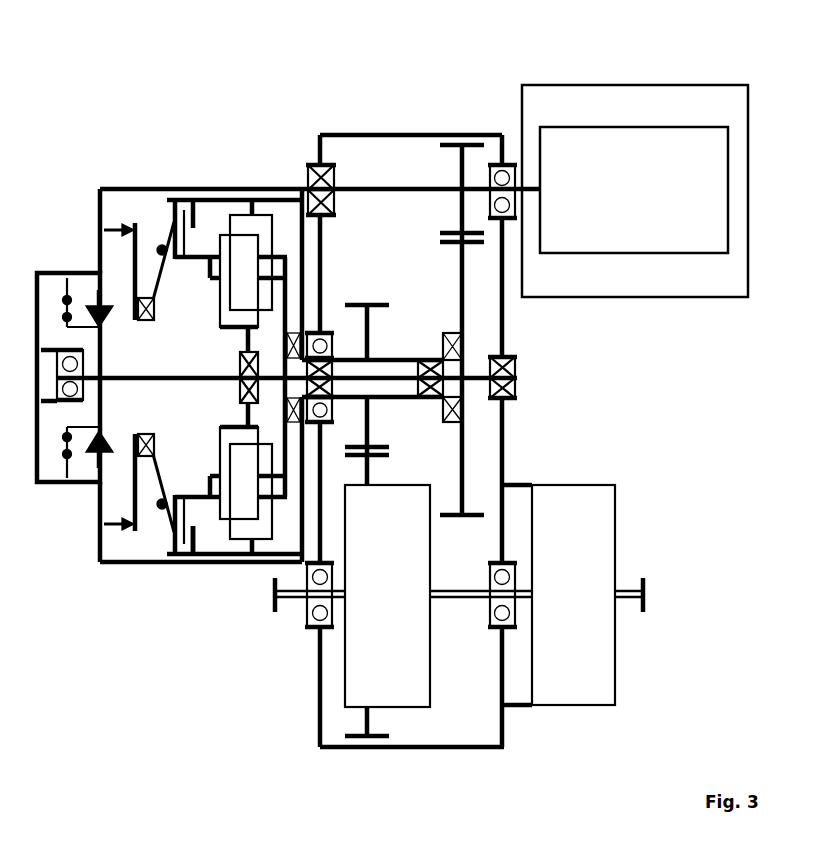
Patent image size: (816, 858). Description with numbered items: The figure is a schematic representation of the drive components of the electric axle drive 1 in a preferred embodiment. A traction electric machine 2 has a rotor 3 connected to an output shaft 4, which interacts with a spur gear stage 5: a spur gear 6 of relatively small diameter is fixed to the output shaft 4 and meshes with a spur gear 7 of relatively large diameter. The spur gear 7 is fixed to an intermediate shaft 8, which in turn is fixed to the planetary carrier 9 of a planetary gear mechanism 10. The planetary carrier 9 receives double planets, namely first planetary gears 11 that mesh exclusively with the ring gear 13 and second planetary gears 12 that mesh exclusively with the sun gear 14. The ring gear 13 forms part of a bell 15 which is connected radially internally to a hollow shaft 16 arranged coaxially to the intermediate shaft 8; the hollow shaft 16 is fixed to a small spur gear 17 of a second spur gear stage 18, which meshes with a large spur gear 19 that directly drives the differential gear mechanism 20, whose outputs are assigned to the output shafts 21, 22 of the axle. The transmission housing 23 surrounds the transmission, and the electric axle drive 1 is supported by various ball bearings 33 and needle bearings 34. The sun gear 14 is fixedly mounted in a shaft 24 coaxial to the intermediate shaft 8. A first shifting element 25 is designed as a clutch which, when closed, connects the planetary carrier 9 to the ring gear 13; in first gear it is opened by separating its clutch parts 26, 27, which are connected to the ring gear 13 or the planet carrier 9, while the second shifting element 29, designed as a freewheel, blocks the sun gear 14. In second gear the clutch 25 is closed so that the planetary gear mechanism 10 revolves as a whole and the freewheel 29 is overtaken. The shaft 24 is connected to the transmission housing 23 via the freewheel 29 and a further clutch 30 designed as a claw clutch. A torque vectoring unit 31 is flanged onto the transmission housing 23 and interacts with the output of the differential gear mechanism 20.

The electric axle drive 1 is at (207, 52).
The electric machine 2 is at (600, 85).
The rotor 3 is at (668, 127).
The output shaft 4 is at (395, 189).
The spur gear stage 5 is at (470, 252).
The spur gear 6 is at (467, 145).
The spur gear 7 is at (466, 432).
The intermediate shaft 8 is at (378, 360).
The planetary carrier 9 is at (303, 292).
The planetary gear mechanism 10 is at (218, 232).
The first planetary gears 11 is at (270, 225).
The second planetary gears 12 is at (214, 303).
The ring gear 13 is at (253, 200).
The sun gear 14 is at (234, 333).
The bell 15 is at (303, 250).
The hollow shaft 16 is at (437, 350).
The spur gear 17 is at (372, 305).
The second spur gear stage 18 is at (392, 451).
The spur gear 19 is at (357, 750).
The differential gear mechanism 20 is at (432, 658).
The output shaft 21 is at (292, 603).
The output shaft 22 is at (628, 600).
The transmission housing 23 is at (100, 215).
The shaft 24 is at (143, 385).
The first shifting element 25 is at (150, 215).
The clutch part 26 is at (182, 560).
The clutch part 27 is at (190, 515).
The second shifting element 29 is at (118, 325).
The further clutch 30 is at (52, 487).
The torque vectoring unit 31 is at (617, 507).
The ball bearings 33 is at (488, 203).
The needle bearings 34 is at (335, 165).